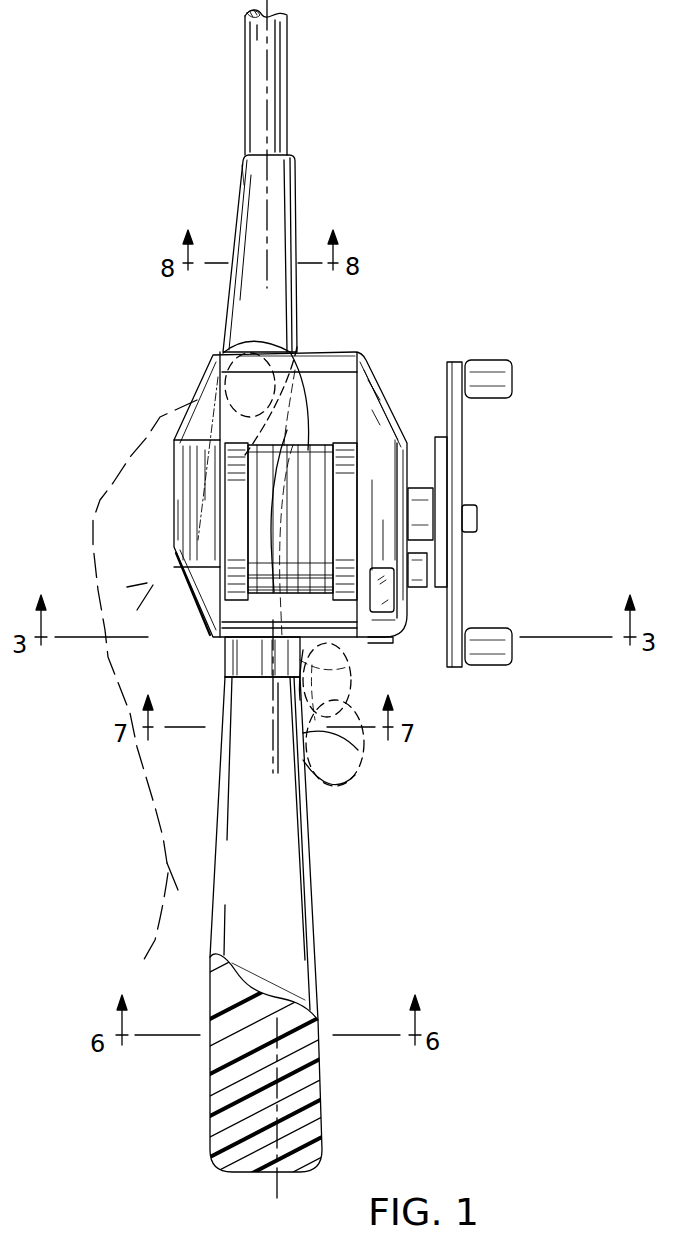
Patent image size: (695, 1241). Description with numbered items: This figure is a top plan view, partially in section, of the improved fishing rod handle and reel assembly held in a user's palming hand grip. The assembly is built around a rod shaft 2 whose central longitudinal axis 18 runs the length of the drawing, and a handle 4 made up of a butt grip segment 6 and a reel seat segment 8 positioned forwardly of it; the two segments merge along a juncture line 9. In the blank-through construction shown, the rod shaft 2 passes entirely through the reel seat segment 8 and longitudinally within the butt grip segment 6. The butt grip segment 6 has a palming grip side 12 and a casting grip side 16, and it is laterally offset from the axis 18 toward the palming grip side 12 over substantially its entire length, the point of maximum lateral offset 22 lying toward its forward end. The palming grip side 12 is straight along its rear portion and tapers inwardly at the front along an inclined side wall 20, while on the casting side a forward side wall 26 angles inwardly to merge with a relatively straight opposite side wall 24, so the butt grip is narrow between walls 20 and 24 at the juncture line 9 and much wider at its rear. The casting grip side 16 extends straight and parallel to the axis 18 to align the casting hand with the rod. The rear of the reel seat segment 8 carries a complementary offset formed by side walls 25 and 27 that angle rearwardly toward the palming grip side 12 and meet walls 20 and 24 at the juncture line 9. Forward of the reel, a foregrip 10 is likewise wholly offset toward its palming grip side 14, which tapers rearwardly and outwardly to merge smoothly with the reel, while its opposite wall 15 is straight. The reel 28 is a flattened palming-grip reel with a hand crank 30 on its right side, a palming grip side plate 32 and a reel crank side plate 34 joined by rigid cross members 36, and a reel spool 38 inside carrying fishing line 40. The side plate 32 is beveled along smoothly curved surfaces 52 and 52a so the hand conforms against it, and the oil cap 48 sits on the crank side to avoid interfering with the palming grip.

The rod shaft 2 is at (288, 108).
The handle 4 is at (336, 864).
The butt grip segment 6 is at (332, 1112).
The reel seat segment 8 is at (232, 670).
The juncture line 9 is at (260, 680).
The foregrip 10 is at (218, 324).
The palming grip side 12 is at (208, 976).
The palming grip side 14 is at (232, 285).
The opposite wall 15 is at (297, 285).
The casting grip side 16 is at (322, 1022).
The central longitudinal axis 18 is at (272, 745).
The inclined side wall 20 is at (217, 730).
The point of maximum lateral offset 22 is at (214, 775).
The opposite side wall 24 is at (323, 743).
The side wall 25 is at (222, 672).
The forward side wall 26 is at (305, 798).
The side wall 27 is at (335, 667).
The reel 28 is at (395, 353).
The hand crank 30 is at (490, 360).
The palming grip side plate 32 is at (173, 488).
The reel crank side plate 34 is at (405, 445).
The rigid cross members 36 is at (350, 357).
The reel spool 38 is at (318, 452).
The fishing line 40 is at (278, 298).
The oil cap 48 is at (400, 588).
The curved surface 52 is at (195, 612).
The curved surface 52a is at (180, 423).